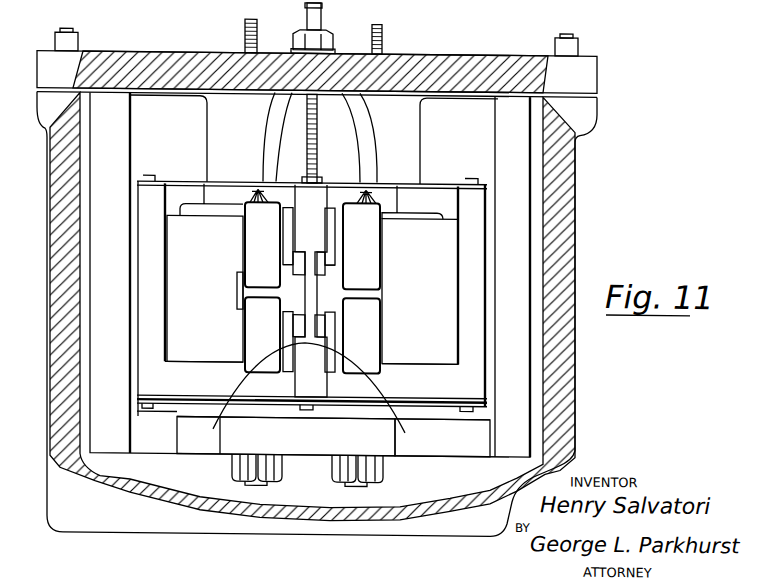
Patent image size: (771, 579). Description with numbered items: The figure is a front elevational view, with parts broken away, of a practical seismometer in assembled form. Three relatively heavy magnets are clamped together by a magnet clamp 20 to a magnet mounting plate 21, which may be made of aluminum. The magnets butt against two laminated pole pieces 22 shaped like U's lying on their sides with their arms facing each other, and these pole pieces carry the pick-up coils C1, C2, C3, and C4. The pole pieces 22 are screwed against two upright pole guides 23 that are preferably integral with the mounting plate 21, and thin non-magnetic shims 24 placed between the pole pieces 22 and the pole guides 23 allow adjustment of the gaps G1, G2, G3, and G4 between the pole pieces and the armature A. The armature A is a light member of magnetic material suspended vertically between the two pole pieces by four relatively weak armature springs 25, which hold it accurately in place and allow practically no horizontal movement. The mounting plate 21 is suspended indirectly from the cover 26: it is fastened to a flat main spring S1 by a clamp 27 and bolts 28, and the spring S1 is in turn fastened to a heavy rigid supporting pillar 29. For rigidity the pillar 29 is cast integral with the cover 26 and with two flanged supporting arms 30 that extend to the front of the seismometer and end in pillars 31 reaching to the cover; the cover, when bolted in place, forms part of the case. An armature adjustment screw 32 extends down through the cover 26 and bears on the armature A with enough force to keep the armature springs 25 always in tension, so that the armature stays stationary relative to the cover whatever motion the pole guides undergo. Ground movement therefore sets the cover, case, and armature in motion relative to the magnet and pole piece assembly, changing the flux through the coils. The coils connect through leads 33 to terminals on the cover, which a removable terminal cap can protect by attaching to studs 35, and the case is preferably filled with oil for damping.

The magnet clamp 20 is at (398, 212).
The magnet mounting plate 21 is at (190, 381).
The laminated pole pieces 22 is at (182, 244).
The pole guides 23 is at (150, 274).
The shims 24 is at (165, 314).
The armature springs 25 is at (207, 183).
The cover 26 is at (158, 63).
The clamp 27 is at (296, 443).
The bolts 28 is at (340, 478).
The supporting pillar 29 is at (205, 128).
The flanged supporting arms 30 is at (147, 447).
The pillars 31 is at (95, 174).
The armature adjustment screw 32 is at (318, 133).
The leads 33 is at (266, 131).
The studs 35 is at (245, 32).
The armature A is at (311, 291).
The pick-up coil C1 is at (262, 238).
The pick-up coil C2 is at (262, 334).
The pick-up coil C3 is at (361, 239).
The pick-up coil C4 is at (361, 335).
The gap G1 is at (287, 210).
The gap G2 is at (201, 435).
The gap G3 is at (337, 210).
The gap G4 is at (442, 438).
The main spring S1 is at (250, 426).